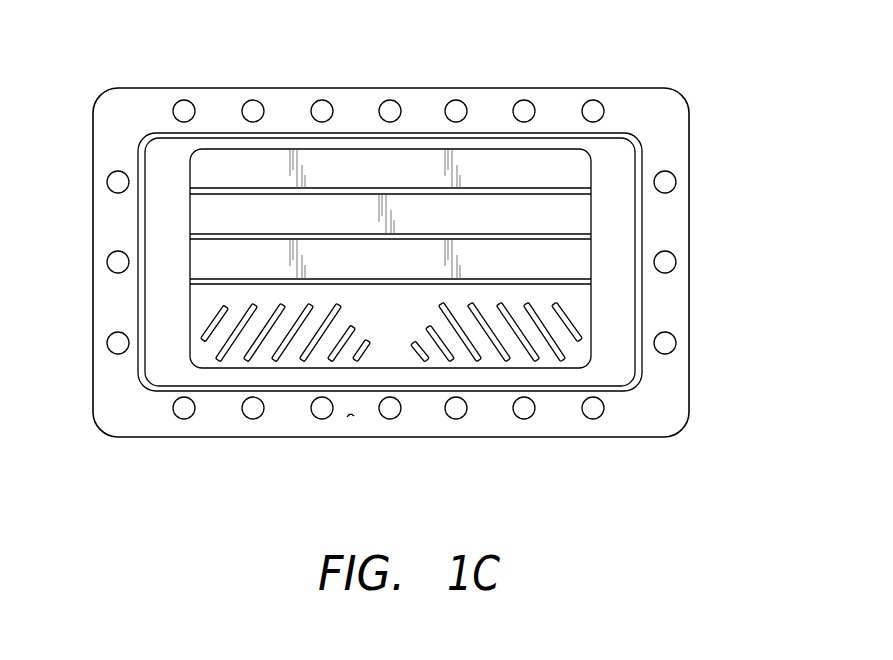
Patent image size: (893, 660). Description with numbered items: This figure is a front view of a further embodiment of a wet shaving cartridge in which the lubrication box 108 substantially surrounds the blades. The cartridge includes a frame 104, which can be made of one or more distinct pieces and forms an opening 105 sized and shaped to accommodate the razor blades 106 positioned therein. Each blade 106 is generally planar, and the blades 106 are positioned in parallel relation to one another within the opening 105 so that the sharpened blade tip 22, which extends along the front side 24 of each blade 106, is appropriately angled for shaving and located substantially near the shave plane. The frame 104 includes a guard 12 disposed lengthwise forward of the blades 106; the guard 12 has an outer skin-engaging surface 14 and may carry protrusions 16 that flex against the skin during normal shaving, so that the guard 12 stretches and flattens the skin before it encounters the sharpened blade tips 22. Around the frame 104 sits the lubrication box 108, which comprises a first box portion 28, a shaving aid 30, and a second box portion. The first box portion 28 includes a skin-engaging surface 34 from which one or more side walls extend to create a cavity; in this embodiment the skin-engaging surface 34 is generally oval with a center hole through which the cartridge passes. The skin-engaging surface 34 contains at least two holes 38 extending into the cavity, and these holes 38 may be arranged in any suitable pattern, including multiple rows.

The guard 12 is at (595, 345).
The outer skin-engaging surface 14 is at (204, 355).
The protrusions 16 is at (393, 338).
The sharpened blade tip 22 is at (389, 245).
The front side 24 is at (225, 236).
The first box portion 28 is at (422, 242).
The shaving aid 30 is at (259, 405).
The skin-engaging surface 34 is at (352, 420).
The holes 38 is at (178, 418).
The frame 104 is at (611, 224).
The opening 105 is at (190, 222).
The razor blade 106 is at (567, 170).
The lubrication box 108 is at (692, 366).